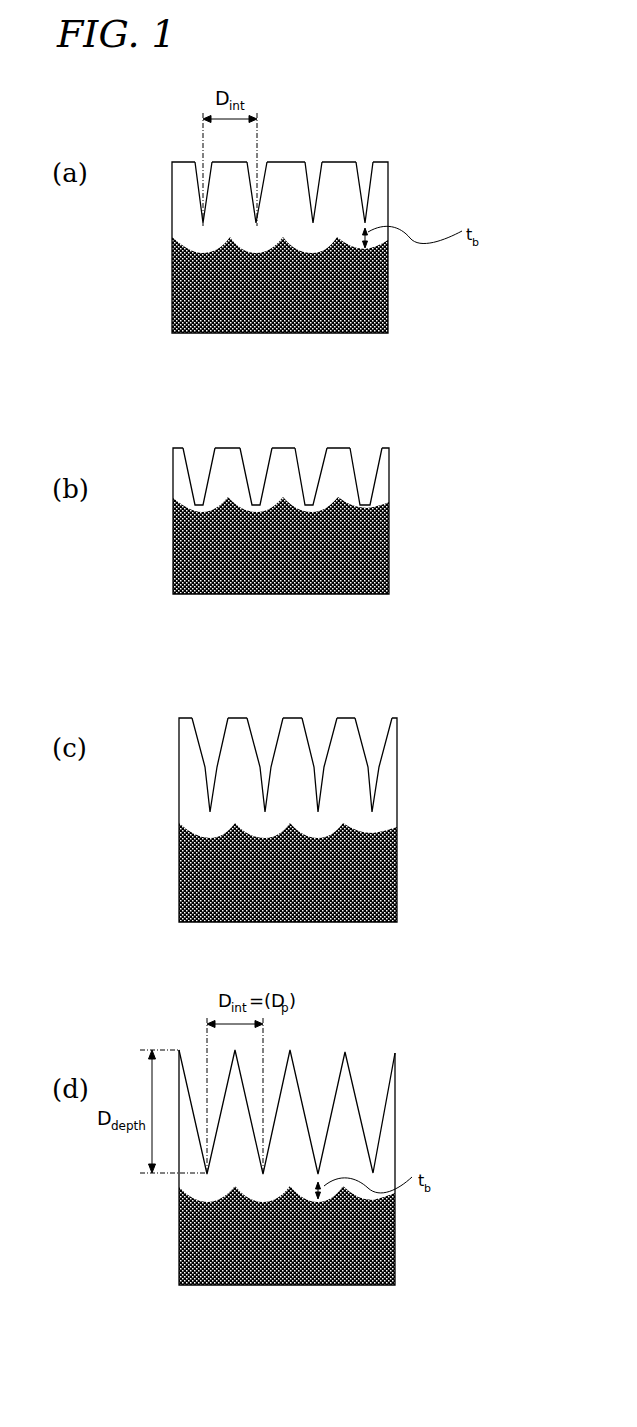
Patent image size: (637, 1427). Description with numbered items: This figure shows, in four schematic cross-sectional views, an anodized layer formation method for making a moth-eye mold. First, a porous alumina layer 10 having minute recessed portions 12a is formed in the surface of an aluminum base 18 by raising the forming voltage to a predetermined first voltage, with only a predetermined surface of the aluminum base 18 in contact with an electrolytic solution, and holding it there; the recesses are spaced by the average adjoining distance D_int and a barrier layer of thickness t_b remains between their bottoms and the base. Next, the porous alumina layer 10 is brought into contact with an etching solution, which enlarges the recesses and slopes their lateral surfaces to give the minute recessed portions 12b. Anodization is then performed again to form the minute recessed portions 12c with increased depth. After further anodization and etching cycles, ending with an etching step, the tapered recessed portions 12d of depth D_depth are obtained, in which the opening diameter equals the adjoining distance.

The porous alumina layer 10 is at (379, 215).
The aluminum base 18 is at (388, 302).
The minute recessed portions 12a is at (312, 161).
The minute recessed portions which have sloped lateral surfaces 12b is at (363, 458).
The minute recessed portions with an increased depth 12c is at (373, 720).
The recessed portions 12d is at (375, 1063).